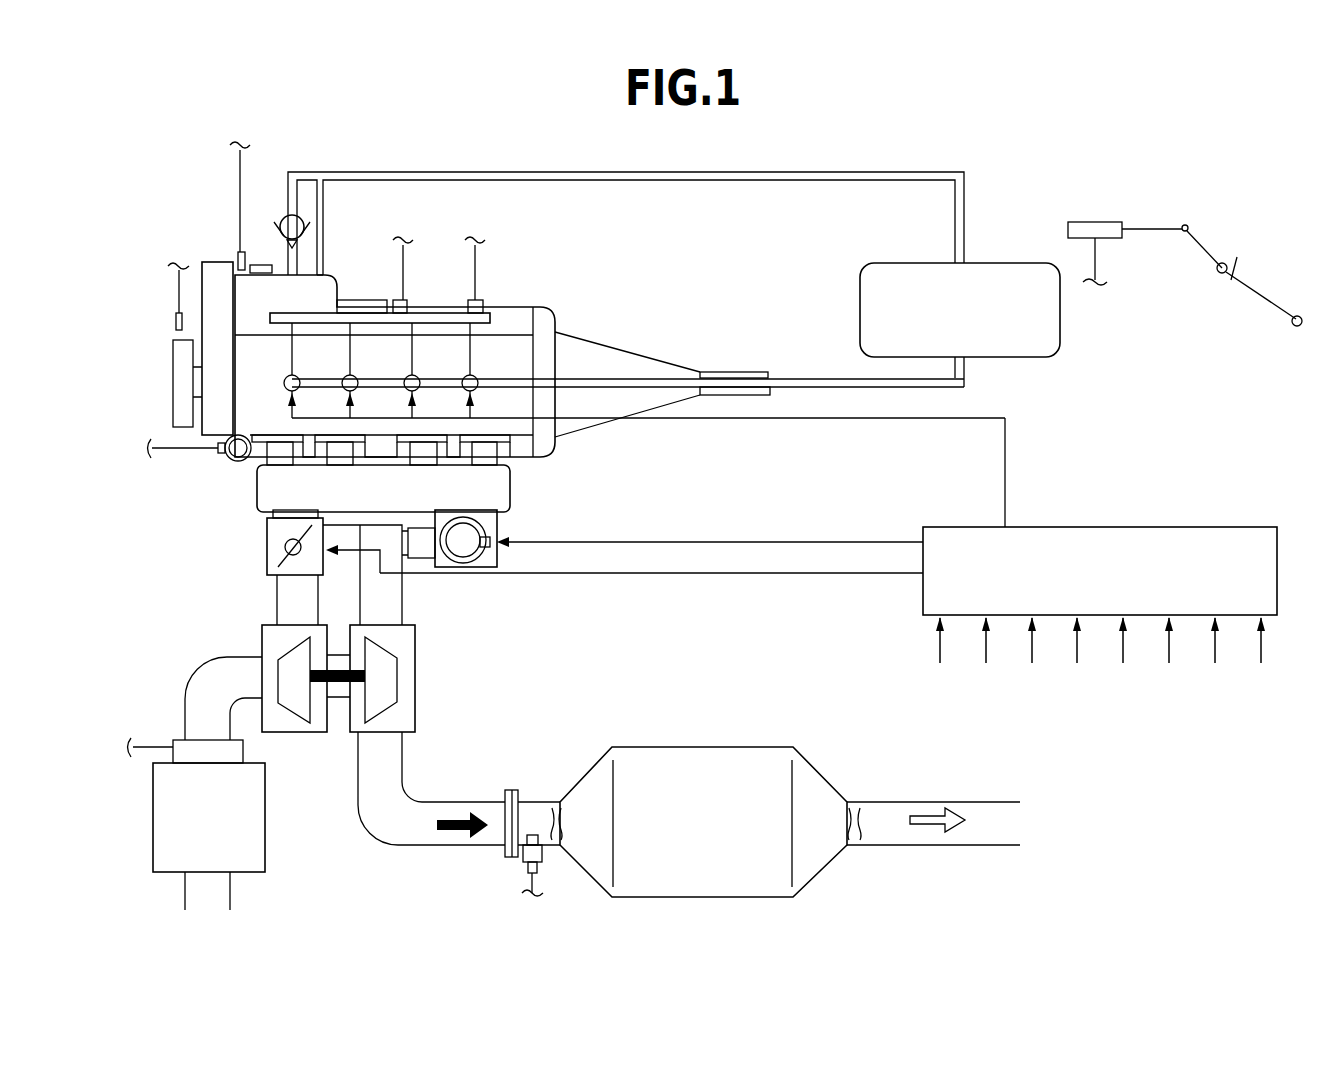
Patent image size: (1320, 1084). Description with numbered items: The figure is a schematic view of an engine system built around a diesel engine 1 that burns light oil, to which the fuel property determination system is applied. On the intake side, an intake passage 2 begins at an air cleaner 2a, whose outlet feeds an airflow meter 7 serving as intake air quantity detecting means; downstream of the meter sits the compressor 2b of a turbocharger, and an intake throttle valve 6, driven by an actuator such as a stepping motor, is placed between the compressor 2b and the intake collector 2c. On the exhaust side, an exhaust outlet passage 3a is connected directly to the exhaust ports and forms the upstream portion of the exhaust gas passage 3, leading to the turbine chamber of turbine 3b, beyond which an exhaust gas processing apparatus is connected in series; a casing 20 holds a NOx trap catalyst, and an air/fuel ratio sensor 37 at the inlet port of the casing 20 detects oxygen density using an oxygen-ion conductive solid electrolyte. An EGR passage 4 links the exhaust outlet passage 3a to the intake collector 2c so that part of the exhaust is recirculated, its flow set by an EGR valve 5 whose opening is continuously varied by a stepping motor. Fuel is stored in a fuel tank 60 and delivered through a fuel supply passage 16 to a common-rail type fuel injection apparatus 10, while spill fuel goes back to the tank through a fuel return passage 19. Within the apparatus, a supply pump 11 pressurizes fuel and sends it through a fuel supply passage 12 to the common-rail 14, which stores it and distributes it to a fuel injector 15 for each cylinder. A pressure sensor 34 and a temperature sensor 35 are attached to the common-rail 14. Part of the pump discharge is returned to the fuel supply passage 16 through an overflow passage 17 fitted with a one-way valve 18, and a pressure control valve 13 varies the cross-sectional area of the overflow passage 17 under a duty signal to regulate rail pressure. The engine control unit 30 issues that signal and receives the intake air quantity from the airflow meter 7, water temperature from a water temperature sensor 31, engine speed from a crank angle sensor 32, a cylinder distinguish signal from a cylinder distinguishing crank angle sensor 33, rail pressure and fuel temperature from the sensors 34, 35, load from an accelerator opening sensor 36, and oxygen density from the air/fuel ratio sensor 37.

The diesel engine 1 is at (607, 322).
The intake passage 2 is at (187, 692).
The air cleaner 2a is at (153, 800).
The compressor 2b is at (273, 672).
The intake collector 2c is at (257, 490).
The exhaust gas passage 3 is at (442, 847).
The exhaust outlet passage 3a is at (405, 600).
The turbine 3b is at (416, 700).
The EGR passage 4 is at (420, 553).
The EGR valve 5 is at (505, 543).
The intake throttle valve 6 is at (266, 548).
The airflow meter 7 is at (243, 748).
The fuel injection apparatus 10 is at (546, 283).
The supply pump 11 is at (333, 272).
The fuel supply passage 12 is at (352, 298).
The pressure control valve 13 is at (266, 264).
The common-rail 14 is at (325, 312).
The fuel injector 15 is at (283, 377).
The fuel supply passage 16 is at (940, 170).
The overflow passage 17 is at (286, 212).
The one-way valve 18 is at (297, 216).
The fuel return passage 19 is at (680, 377).
The casing 20 is at (833, 886).
The engine control unit 30 is at (1180, 527).
The water temperature sensor 31 is at (222, 461).
The crank angle sensor 32 is at (176, 318).
The cylinder distinguishing crank angle sensor 33 is at (239, 254).
The pressure sensor 34 is at (411, 298).
The temperature sensor 35 is at (484, 298).
The accelerator opening sensor 36 is at (1093, 222).
The air/fuel ratio sensor 37 is at (543, 853).
The fuel tank 60 is at (997, 263).